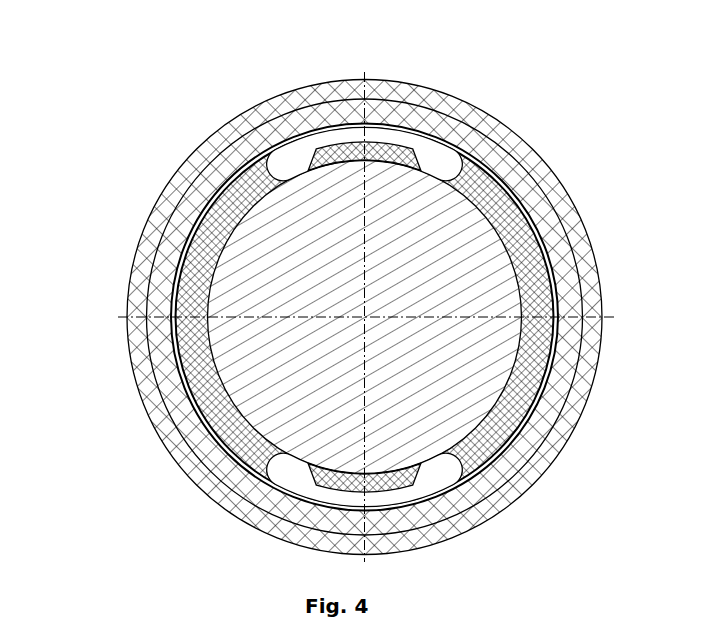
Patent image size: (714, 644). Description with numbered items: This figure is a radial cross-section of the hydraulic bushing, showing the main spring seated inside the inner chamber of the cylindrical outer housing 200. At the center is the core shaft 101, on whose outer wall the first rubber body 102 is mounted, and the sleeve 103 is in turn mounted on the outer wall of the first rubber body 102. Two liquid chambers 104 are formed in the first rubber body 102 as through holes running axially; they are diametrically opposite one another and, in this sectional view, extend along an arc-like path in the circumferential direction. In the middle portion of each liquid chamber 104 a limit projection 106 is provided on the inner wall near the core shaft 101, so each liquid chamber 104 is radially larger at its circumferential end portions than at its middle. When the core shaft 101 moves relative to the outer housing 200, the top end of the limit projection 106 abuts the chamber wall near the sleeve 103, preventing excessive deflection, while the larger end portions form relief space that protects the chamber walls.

The core shaft 101 is at (222, 305).
The first rubber body 102 is at (188, 265).
The sleeve 103 is at (203, 176).
The liquid chamber 104 is at (283, 160).
The limit projection 106 is at (343, 148).
The outer housing 200 is at (403, 98).